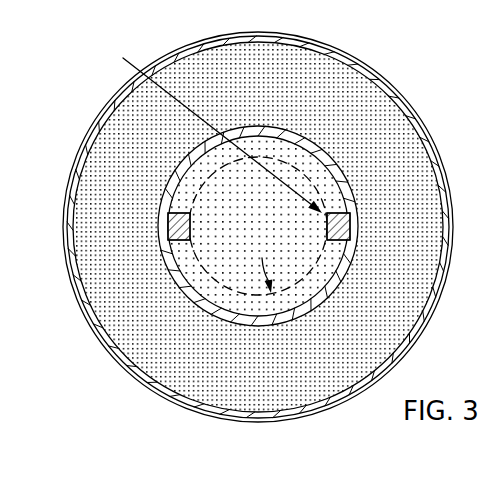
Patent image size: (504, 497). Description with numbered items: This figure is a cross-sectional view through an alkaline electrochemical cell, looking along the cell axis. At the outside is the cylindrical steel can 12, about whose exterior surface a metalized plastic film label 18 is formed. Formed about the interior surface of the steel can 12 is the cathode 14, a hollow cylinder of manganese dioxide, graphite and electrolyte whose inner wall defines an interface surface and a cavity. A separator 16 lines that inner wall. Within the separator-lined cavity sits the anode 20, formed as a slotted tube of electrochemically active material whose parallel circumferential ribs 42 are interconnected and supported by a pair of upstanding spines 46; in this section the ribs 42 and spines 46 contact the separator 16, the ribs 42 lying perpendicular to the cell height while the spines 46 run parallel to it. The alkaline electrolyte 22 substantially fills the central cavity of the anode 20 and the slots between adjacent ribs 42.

The steel can 12 is at (182, 404).
The cathode 14 is at (157, 359).
The separator 16 is at (163, 251).
The plastic film label 18 is at (107, 349).
The anode 20 is at (217, 185).
The alkaline electrolyte 22 is at (207, 126).
The circumferential ribs 42 is at (330, 248).
The spines 46 is at (178, 213).